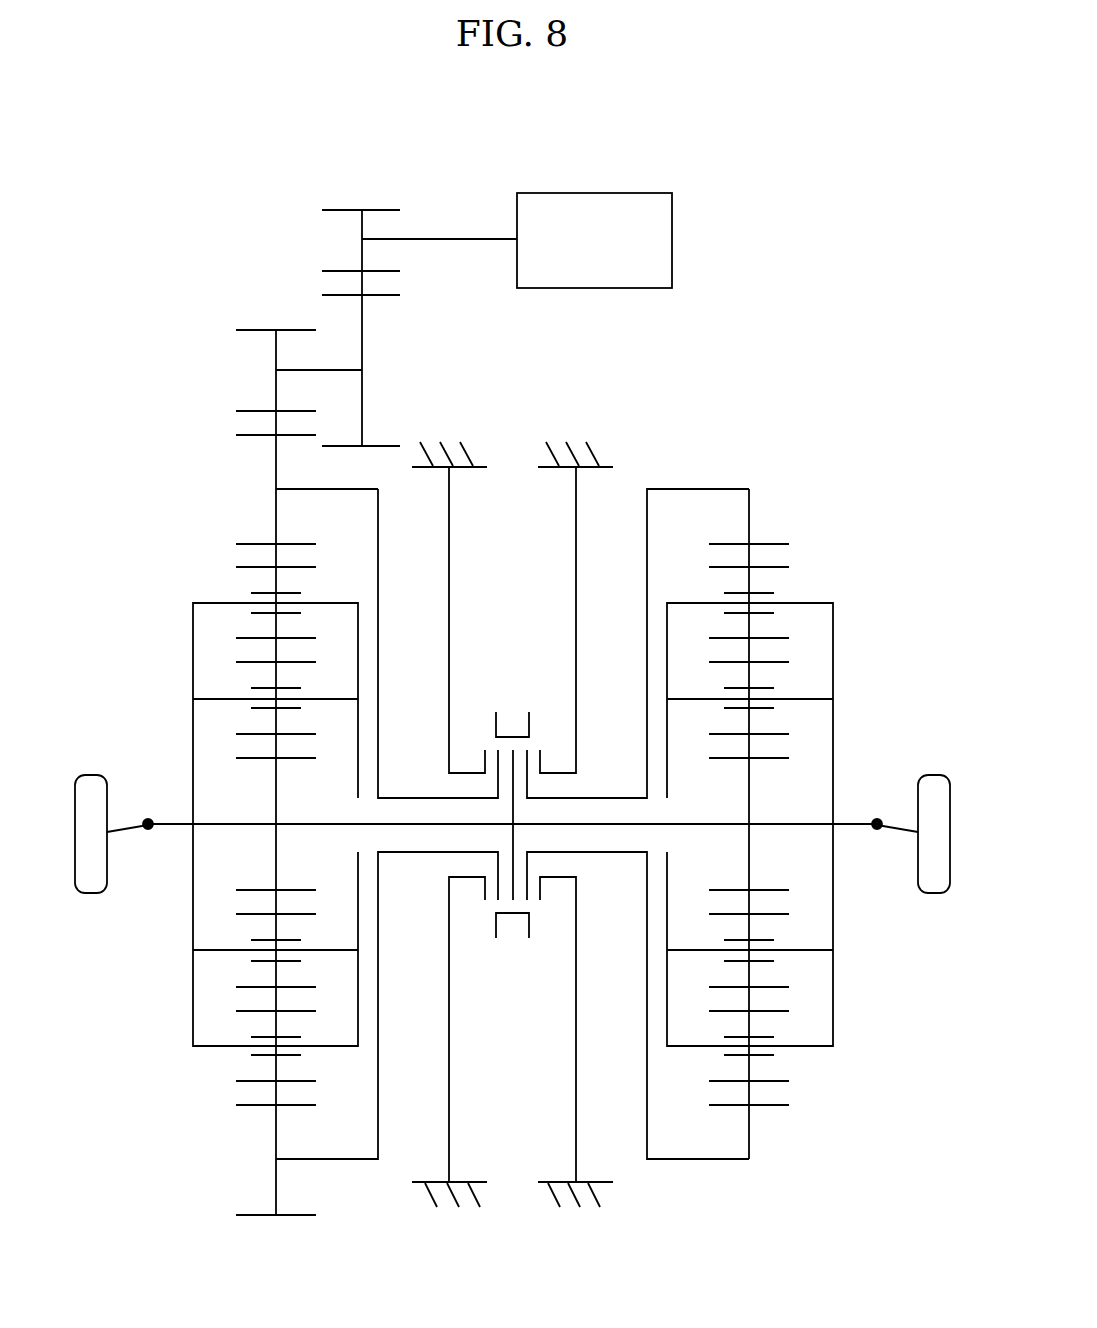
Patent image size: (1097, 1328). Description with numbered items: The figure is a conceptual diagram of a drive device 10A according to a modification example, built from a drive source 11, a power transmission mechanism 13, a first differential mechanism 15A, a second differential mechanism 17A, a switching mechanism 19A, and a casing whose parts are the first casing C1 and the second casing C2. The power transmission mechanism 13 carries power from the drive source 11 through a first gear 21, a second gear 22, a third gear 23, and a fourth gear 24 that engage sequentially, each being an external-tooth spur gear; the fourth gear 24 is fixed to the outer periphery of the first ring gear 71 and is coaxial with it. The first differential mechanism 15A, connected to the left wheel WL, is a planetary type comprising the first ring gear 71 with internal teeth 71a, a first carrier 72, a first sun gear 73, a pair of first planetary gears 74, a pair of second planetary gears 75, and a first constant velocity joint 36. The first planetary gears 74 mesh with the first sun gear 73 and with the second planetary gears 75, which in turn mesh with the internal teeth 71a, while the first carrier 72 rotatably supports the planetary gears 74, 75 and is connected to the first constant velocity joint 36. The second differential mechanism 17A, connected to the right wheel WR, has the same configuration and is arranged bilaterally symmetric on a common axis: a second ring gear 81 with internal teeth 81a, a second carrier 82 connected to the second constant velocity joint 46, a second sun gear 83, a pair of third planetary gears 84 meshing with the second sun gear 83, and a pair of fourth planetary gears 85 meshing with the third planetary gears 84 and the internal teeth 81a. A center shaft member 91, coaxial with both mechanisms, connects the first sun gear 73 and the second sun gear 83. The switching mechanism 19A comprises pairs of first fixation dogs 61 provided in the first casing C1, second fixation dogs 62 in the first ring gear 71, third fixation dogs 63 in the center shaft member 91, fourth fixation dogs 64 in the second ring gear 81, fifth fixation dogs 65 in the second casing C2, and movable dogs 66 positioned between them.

The drive device 10A is at (828, 173).
The drive source 11 is at (628, 192).
The power transmission mechanism 13 is at (214, 203).
The first differential mechanism 15A is at (483, 436).
The second differential mechanism 17A is at (617, 430).
The switching mechanism 19A is at (525, 609).
The first gear 21 is at (320, 210).
The second gear 22 is at (320, 295).
The third gear 23 is at (236, 330).
The fourth gear 24 is at (236, 435).
The first constant velocity joint 36 is at (148, 820).
The second constant velocity joint 46 is at (877, 820).
The first fixation dogs 61 is at (470, 755).
The second fixation dogs 62 is at (477, 752).
The third fixation dogs 63 is at (488, 748).
The fourth fixation dogs 64 is at (548, 752).
The fifth fixation dogs 65 is at (560, 755).
The movable dogs 66 is at (513, 730).
The first ring gear 71 is at (378, 488).
The internal teeth 71a is at (262, 543).
The first carrier 72 is at (193, 603).
The first sun gear 73 is at (240, 758).
The first planetary gears 74 is at (240, 662).
The second planetary gears 75 is at (240, 567).
The second ring gear 81 is at (708, 488).
The internal teeth 81a is at (770, 543).
The second carrier 82 is at (833, 603).
The second sun gear 83 is at (785, 758).
The third planetary gears 84 is at (785, 662).
The fourth planetary gears 85 is at (785, 567).
The center shaft member 91 is at (612, 822).
The left wheel WL is at (105, 774).
The right wheel WR is at (930, 774).
The first casing C1 is at (449, 1136).
The second casing C2 is at (576, 1136).